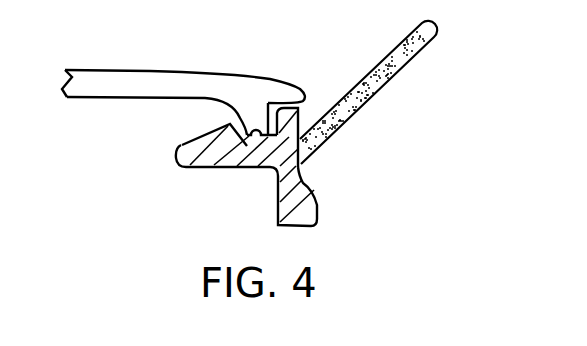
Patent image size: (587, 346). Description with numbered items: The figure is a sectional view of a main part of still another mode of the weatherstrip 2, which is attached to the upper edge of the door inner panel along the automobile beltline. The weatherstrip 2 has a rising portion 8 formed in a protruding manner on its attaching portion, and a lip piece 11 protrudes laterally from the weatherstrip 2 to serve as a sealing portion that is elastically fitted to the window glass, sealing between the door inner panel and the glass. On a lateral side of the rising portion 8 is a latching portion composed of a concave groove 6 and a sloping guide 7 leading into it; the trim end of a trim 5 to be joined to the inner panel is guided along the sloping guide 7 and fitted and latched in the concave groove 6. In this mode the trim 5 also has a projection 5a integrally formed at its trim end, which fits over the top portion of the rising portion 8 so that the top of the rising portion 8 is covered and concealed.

The weatherstrip 2 is at (268, 217).
The trim 5 is at (213, 85).
The projection 5a is at (296, 92).
The concave groove 6 is at (247, 150).
The sloping guide 7 is at (185, 143).
The rising portion 8 is at (302, 183).
The lip piece 11 is at (378, 80).